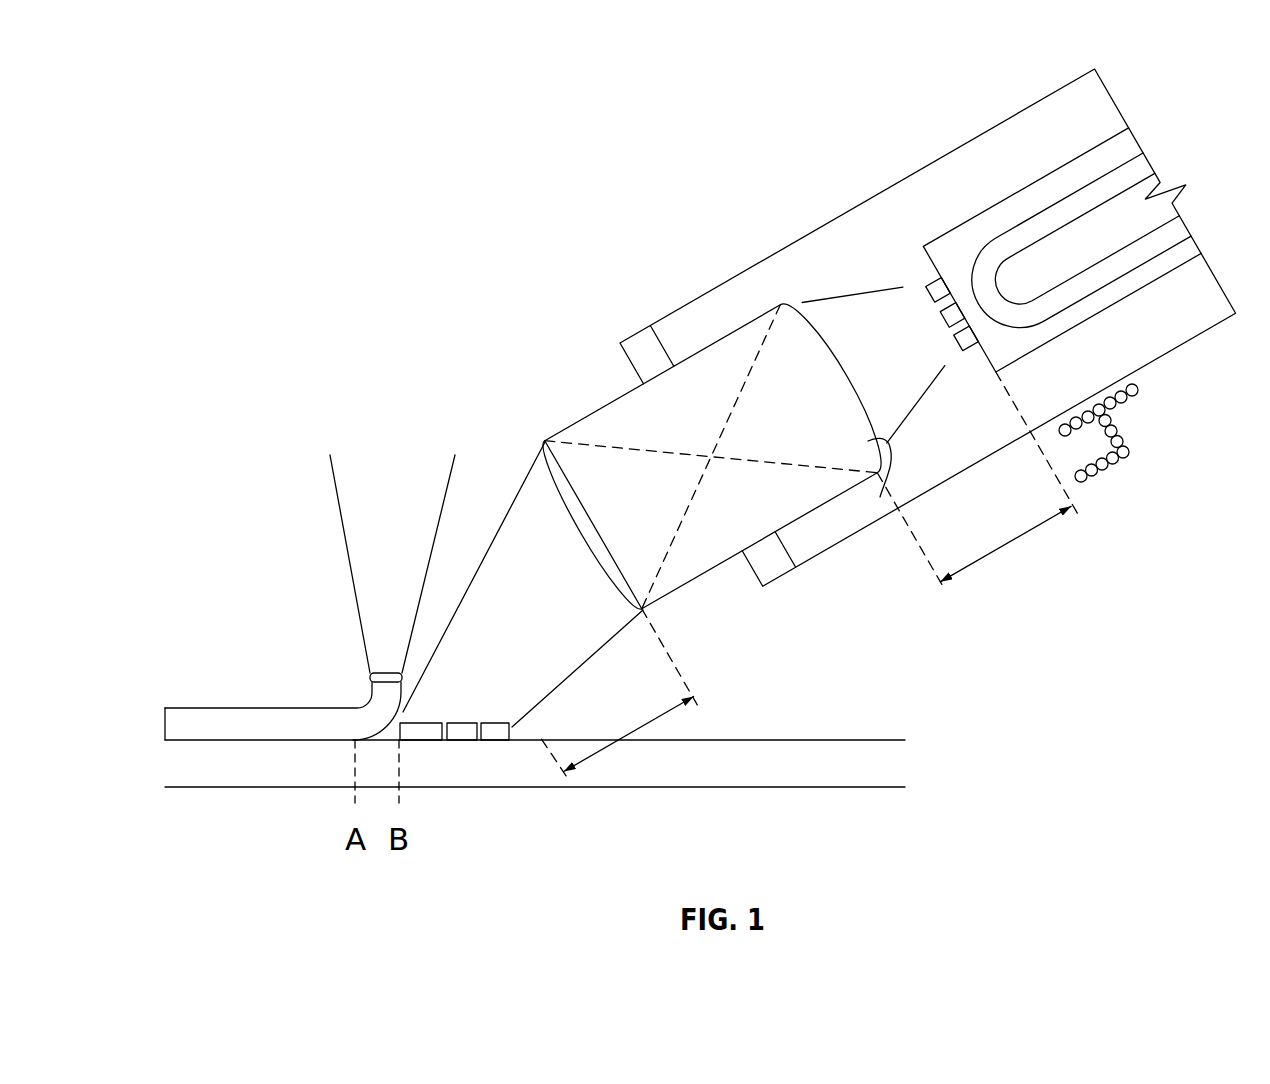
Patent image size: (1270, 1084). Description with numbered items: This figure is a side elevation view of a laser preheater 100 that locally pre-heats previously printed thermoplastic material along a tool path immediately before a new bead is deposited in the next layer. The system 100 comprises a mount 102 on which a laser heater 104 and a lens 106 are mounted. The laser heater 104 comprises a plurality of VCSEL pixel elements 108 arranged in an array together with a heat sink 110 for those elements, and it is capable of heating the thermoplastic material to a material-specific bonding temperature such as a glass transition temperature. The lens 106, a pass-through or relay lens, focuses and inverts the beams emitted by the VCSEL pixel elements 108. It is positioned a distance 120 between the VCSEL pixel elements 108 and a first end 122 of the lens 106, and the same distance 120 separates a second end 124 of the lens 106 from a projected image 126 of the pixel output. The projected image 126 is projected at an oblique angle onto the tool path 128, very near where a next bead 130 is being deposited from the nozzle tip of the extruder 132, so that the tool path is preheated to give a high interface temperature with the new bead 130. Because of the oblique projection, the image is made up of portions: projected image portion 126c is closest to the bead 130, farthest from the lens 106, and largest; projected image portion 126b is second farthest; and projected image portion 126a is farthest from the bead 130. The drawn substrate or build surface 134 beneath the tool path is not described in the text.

The laser preheater 100 is at (634, 206).
The mount 102 is at (728, 280).
The laser heater 104 is at (1133, 323).
The lens 106 is at (673, 593).
The VCSEL pixel elements 108 is at (962, 351).
The heat sink 110 is at (1092, 173).
The distance 120 is at (1010, 542).
The first end 122 is at (880, 497).
The second end 124 is at (573, 507).
The projected image 126 is at (483, 692).
The projected image portion 126a is at (503, 722).
The projected image portion 126b is at (468, 722).
The projected image portion 126c is at (437, 722).
The tool path 128 is at (541, 740).
The next bead 130 is at (322, 710).
The extruder 132 is at (348, 550).
The substrate 134 is at (260, 770).